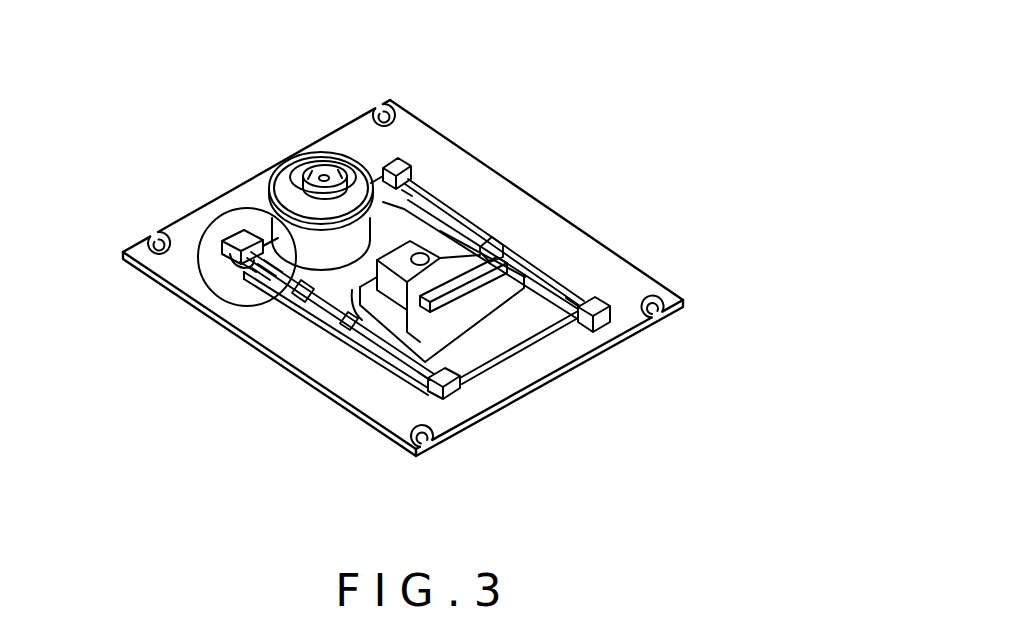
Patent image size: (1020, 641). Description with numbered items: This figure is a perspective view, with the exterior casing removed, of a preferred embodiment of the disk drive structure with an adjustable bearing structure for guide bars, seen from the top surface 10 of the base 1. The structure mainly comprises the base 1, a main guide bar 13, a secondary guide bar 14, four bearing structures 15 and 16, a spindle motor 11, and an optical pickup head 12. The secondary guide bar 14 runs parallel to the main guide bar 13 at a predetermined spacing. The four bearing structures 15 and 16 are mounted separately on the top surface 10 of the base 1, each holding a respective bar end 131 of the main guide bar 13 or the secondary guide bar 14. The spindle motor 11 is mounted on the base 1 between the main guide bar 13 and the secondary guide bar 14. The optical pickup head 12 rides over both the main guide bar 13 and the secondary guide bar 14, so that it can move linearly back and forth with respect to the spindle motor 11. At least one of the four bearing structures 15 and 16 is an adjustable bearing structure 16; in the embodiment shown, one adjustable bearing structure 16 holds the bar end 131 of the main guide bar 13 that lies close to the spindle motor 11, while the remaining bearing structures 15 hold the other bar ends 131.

The base 1 is at (607, 266).
The top surface 10 is at (526, 242).
The spindle motor 11 is at (298, 167).
The optical pickup head 12 is at (445, 253).
The main guide bar 13 is at (350, 352).
The bar end 131 is at (410, 182).
The secondary guide bar 14 is at (432, 207).
The bearing structure 15 is at (395, 170).
The adjustable bearing structure 16 is at (205, 218).